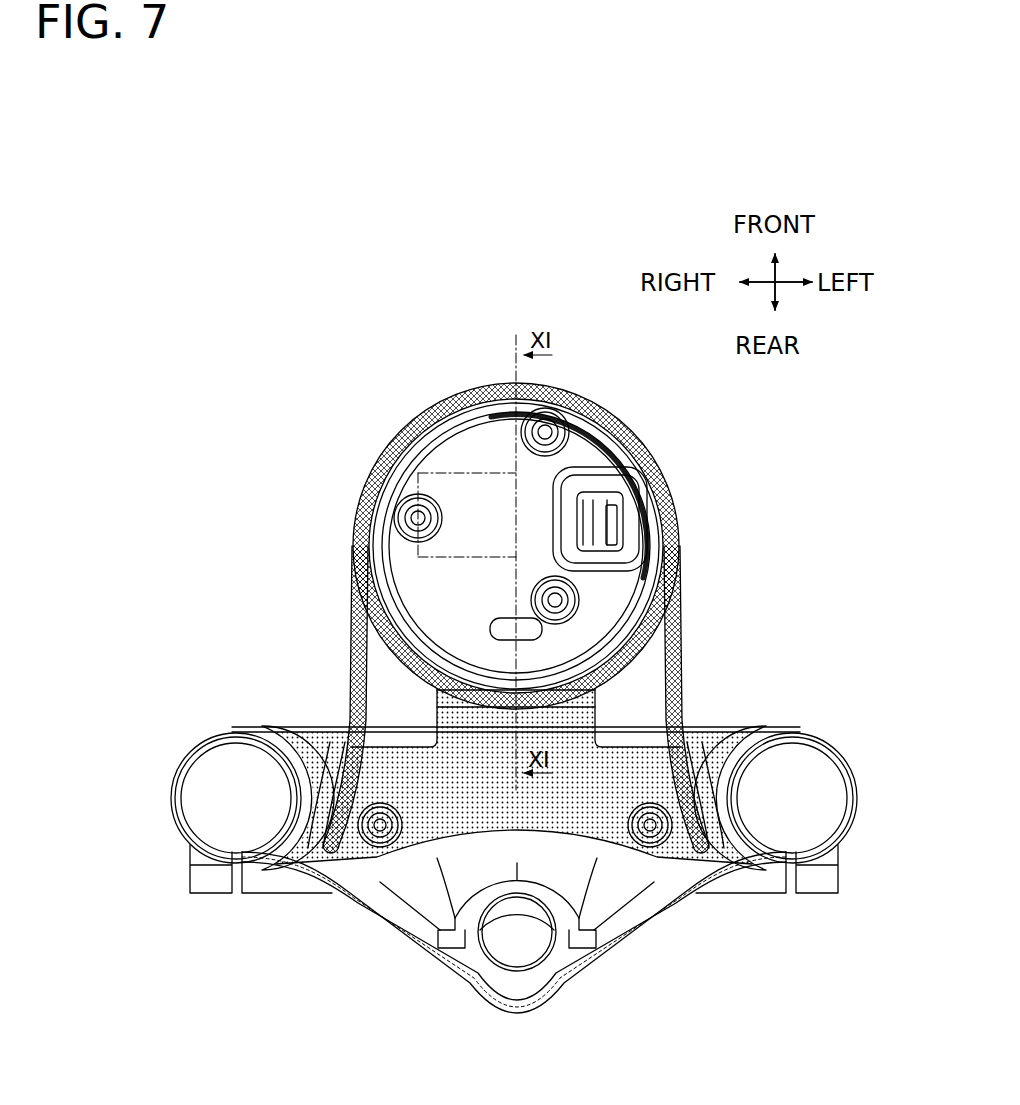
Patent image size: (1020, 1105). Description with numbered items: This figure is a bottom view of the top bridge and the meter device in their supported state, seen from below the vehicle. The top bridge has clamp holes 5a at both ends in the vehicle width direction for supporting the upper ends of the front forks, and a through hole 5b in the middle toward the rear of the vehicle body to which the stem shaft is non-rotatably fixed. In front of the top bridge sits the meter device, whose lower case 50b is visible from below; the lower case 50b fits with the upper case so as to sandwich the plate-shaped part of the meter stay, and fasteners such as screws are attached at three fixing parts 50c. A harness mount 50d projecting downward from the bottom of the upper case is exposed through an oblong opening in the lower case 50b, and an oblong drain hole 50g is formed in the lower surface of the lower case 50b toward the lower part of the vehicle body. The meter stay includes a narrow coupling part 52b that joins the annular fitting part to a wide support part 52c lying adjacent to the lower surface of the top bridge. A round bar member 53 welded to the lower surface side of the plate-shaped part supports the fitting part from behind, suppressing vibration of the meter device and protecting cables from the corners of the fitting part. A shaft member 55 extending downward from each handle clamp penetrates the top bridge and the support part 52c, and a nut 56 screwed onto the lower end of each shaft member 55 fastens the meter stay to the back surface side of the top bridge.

The clamp hole 5a is at (233, 786).
The through hole 5b is at (520, 940).
The lower case 50b is at (467, 432).
The fixing part 50c is at (552, 405).
The harness mount 50d is at (622, 498).
The drain hole 50g is at (494, 617).
The coupling part 52b is at (640, 698).
The support part 52c is at (470, 818).
The round bar member 53 is at (358, 680).
The shaft member 55 is at (378, 842).
The nut 56 is at (333, 856).